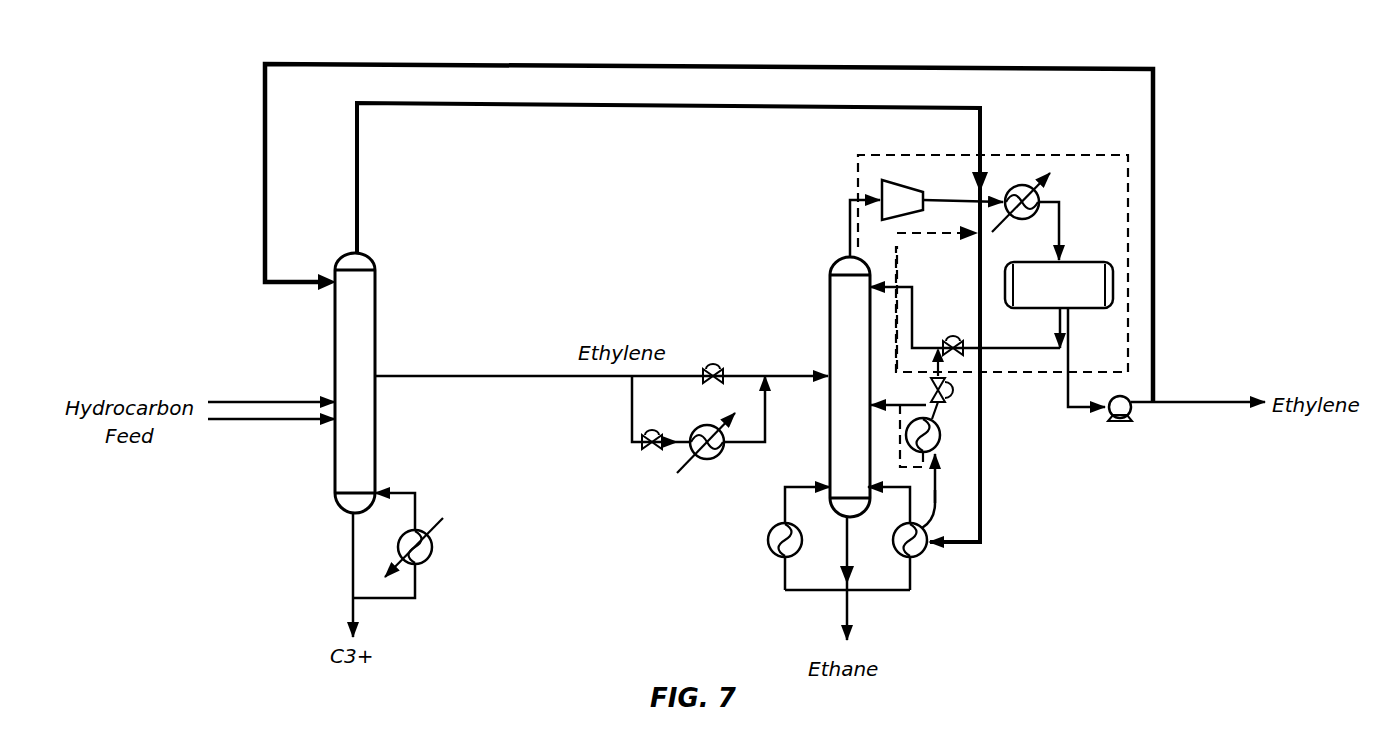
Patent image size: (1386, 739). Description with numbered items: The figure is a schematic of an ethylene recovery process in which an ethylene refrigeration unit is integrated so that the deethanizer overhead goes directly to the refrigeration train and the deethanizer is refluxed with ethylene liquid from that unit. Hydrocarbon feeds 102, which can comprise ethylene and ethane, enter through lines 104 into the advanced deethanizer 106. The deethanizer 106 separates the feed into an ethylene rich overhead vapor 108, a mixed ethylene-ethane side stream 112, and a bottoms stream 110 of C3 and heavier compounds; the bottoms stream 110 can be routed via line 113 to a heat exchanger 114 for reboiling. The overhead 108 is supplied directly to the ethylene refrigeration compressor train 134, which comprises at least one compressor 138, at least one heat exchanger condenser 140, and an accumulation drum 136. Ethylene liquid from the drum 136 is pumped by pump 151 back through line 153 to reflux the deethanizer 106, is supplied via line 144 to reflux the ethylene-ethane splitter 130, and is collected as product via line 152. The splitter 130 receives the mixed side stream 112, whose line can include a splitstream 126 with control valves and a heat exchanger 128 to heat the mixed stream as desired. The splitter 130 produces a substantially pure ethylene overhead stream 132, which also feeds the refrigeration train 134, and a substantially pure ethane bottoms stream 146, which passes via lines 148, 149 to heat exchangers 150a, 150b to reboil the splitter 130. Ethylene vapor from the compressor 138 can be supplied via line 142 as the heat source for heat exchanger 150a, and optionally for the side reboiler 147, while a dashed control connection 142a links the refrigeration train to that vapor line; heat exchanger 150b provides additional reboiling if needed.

The hydrocarbon feeds 102 is at (292, 400).
The lines 104 is at (290, 422).
The advanced deethanizer 106 is at (335, 337).
The ethylene rich overhead vapor 108 is at (355, 215).
The bottoms stream 110 is at (353, 560).
The mixed ethylene-ethane side stream 112 is at (465, 376).
The line 113 is at (392, 601).
The heat exchanger 114 is at (422, 562).
The splitstream 126 is at (632, 408).
The heat exchanger 128 is at (703, 462).
The ethylene-ethane splitter 130 is at (830, 303).
The ethylene overhead stream 132 is at (850, 235).
The ethylene refrigeration compressor train 134 is at (858, 180).
The accumulation drum 136 is at (1066, 262).
The compressor 138 is at (903, 182).
The heat exchanger condenser 140 is at (1020, 182).
The line 142 is at (983, 380).
The control signal line 142a is at (950, 237).
The line 144 is at (913, 332).
The ethane bottoms stream 146 is at (840, 612).
The side reboiler 147 is at (940, 447).
The line 148 is at (880, 592).
The line 149 is at (782, 577).
The heat exchanger 150a is at (927, 548).
The heat exchanger 150b is at (770, 548).
The pump 151 is at (1118, 424).
The line 152 is at (1187, 402).
The line 153 is at (817, 66).